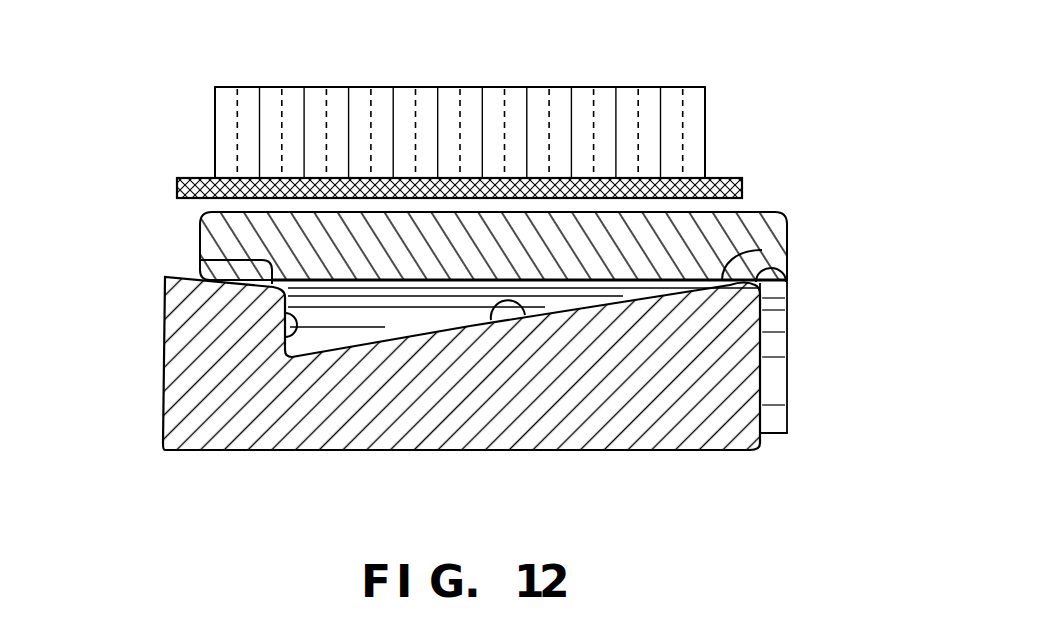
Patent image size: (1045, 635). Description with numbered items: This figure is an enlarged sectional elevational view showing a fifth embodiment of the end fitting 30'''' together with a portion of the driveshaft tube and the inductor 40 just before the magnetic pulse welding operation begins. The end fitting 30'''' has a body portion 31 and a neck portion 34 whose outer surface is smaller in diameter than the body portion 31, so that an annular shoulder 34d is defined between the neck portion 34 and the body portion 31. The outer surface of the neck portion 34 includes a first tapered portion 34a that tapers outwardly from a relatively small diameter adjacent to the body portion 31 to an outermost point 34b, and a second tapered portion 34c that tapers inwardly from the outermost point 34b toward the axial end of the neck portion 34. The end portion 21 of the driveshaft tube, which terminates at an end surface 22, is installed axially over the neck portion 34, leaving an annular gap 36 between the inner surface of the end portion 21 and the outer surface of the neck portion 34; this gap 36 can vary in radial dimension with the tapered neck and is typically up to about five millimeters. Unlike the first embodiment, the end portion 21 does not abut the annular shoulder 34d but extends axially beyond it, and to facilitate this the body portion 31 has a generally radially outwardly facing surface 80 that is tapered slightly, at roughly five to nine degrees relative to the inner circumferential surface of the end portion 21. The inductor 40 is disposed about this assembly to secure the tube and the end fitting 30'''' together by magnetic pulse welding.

The inductor 40 is at (587, 105).
The end portion 21 is at (452, 202).
The end surface 22 is at (200, 233).
The generally radially outwardly facing surface 80 is at (200, 260).
The body portion 31 is at (180, 390).
The neck portion 34 is at (717, 423).
The annular gap 36 is at (430, 320).
The first tapered portion 34a is at (524, 316).
The outermost point 34b is at (762, 250).
The second tapered portion 34c is at (785, 269).
The annular shoulder 34d is at (302, 313).
The end fitting 30'''' is at (235, 532).